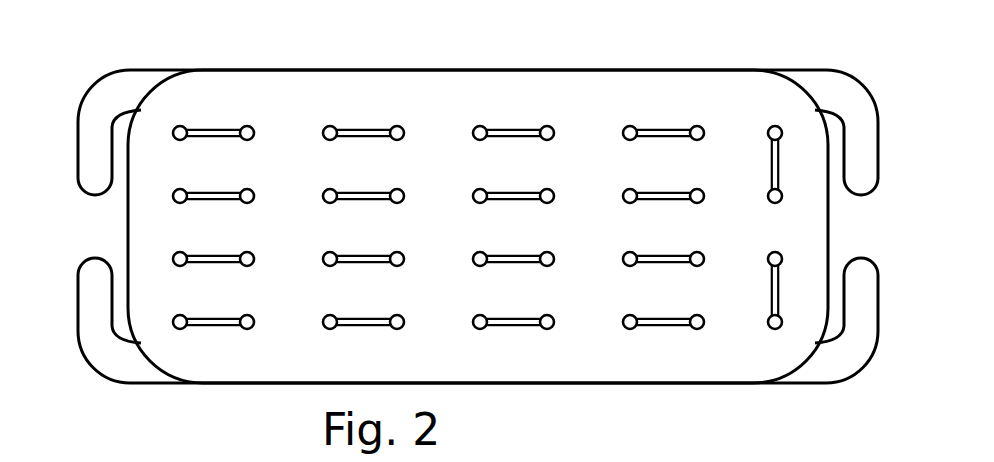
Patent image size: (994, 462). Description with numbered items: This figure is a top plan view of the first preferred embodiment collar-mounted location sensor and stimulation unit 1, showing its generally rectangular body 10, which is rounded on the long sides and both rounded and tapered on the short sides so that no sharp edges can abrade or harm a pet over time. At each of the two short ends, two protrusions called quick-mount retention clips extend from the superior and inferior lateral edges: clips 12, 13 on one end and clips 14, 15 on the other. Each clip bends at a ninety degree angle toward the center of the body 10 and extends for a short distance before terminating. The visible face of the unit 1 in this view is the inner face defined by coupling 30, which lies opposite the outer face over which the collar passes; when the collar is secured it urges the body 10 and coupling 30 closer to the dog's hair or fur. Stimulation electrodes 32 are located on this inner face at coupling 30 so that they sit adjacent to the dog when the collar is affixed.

The collar-mounted location sensor and stimulation unit 1 is at (215, 43).
The body 10 is at (583, 70).
The quick-mount retention clip 12 is at (865, 290).
The quick-mount retention clip 13 is at (863, 142).
The quick-mount retention clip 14 is at (93, 308).
The quick-mount retention clip 15 is at (88, 146).
The coupling 30 is at (378, 97).
The stimulation electrodes 32 is at (650, 329).